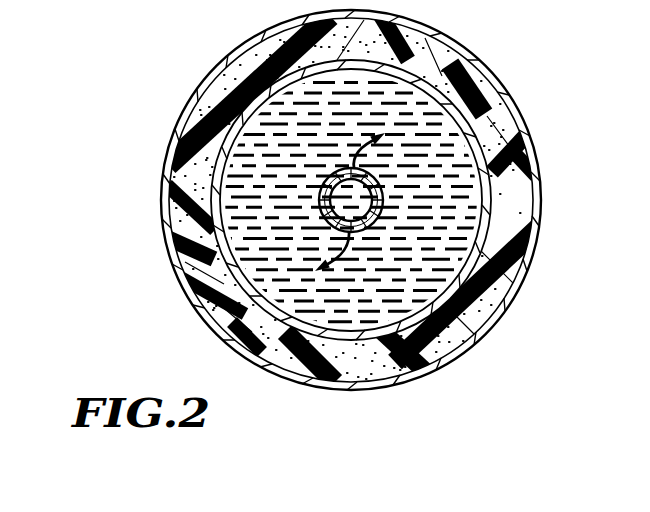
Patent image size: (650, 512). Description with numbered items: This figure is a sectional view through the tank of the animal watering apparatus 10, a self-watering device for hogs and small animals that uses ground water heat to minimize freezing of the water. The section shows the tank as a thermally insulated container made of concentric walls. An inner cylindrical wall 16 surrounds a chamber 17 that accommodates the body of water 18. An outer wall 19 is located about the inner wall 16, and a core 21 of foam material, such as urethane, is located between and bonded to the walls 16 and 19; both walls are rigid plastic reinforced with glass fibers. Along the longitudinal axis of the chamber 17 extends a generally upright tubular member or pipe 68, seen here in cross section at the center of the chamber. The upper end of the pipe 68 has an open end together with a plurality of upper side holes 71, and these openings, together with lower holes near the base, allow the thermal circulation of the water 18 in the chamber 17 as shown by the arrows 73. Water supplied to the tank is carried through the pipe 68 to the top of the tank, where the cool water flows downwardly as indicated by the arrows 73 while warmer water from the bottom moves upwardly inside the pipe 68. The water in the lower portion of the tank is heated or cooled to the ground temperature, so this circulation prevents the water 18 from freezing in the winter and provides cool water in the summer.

The animal watering apparatus 10 is at (522, 74).
The inner cylindrical wall 16 is at (468, 195).
The chamber 17 is at (268, 209).
The body of water 18 is at (532, 167).
The outer wall 19 is at (228, 62).
The core of foam material 21 is at (185, 192).
The tubular member or pipe 68 is at (378, 222).
The upper side holes 71 is at (318, 204).
The arrows 73 is at (366, 153).